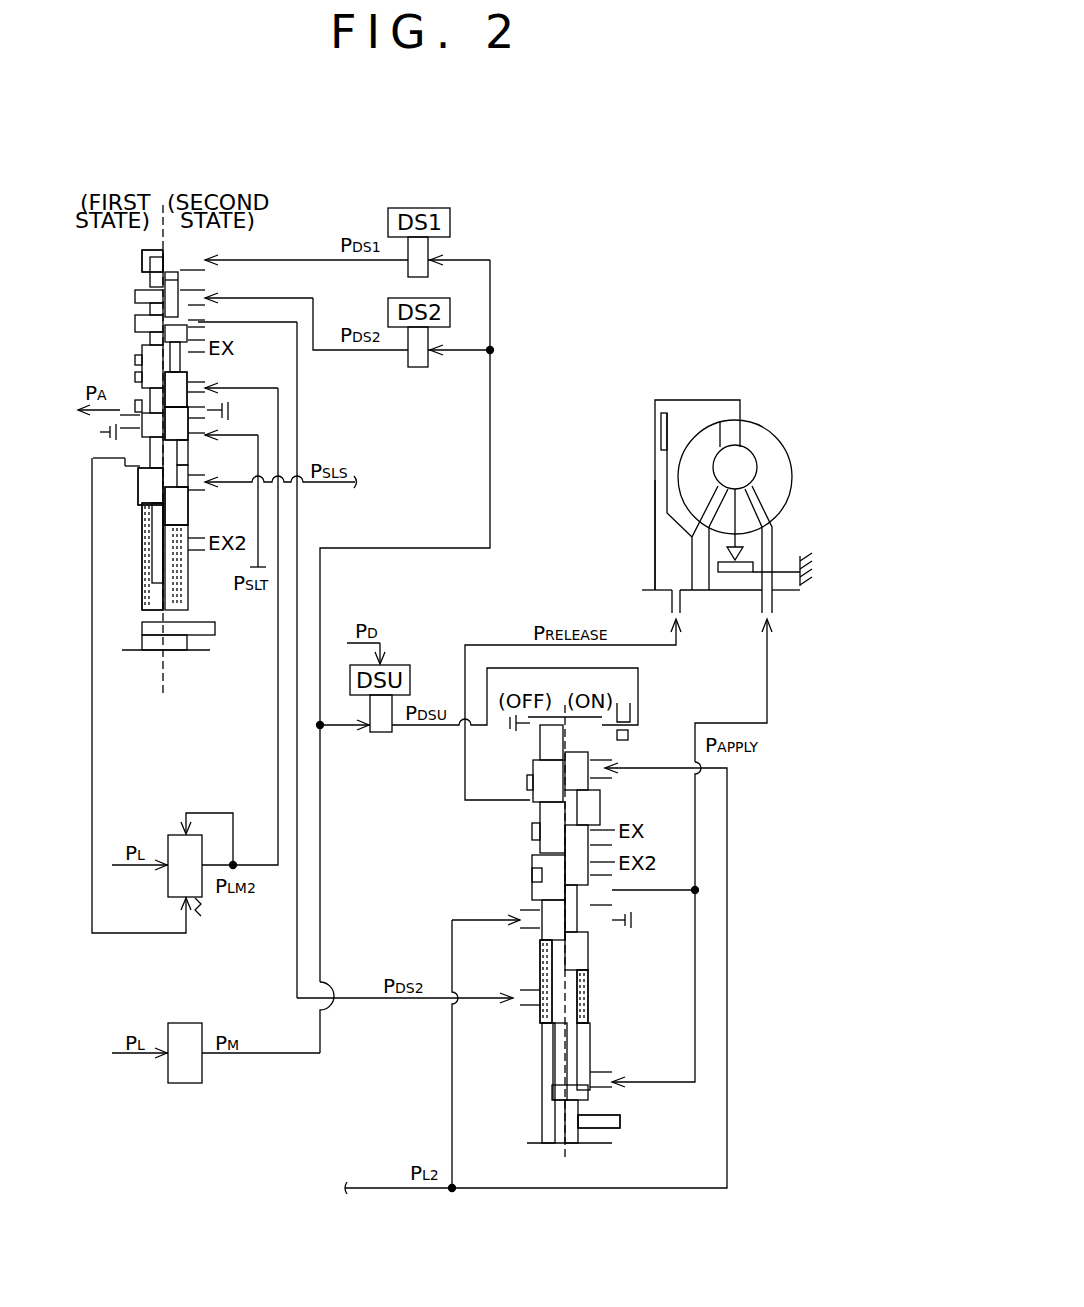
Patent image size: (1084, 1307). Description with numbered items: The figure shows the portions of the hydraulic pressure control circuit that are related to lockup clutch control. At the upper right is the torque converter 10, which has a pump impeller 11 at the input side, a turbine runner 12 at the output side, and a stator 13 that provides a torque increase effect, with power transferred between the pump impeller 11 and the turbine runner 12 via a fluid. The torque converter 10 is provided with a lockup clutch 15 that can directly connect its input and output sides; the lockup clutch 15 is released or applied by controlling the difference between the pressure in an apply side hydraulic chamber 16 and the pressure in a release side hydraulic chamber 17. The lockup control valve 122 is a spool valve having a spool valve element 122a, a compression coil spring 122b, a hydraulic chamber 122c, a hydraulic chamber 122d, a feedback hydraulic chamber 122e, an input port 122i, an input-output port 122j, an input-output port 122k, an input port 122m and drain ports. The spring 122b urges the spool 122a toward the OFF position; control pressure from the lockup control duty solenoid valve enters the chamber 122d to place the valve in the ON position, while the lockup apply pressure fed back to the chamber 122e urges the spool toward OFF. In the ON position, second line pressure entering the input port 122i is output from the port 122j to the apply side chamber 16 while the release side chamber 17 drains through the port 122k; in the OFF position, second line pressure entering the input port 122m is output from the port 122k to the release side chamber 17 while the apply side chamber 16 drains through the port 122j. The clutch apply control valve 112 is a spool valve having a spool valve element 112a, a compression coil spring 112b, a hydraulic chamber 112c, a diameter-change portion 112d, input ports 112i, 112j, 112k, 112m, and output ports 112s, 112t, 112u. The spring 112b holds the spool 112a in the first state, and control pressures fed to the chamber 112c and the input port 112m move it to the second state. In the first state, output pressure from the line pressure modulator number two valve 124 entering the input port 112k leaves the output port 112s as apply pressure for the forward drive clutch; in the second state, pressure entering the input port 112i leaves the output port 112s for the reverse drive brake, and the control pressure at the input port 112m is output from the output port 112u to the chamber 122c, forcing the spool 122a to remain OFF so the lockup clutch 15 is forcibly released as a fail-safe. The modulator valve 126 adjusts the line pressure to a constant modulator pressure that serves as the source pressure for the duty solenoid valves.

The torque converter 10 is at (750, 358).
The pump impeller 11 is at (768, 447).
The turbine runner 12 is at (715, 437).
The stator 13 is at (745, 510).
The lockup clutch 15 is at (660, 432).
The apply side hydraulic chamber 16 is at (680, 425).
The release side hydraulic chamber 17 is at (665, 560).
The clutch apply control valve 112 is at (163, 207).
The spool valve element 112a is at (148, 368).
The compression coil spring 112b is at (142, 598).
The hydraulic chamber 112c is at (200, 252).
The diameter-change portion 112d is at (135, 296).
The input port 112i is at (210, 438).
The input port 112j is at (205, 488).
The input port 112k is at (210, 392).
The input port 112m is at (205, 302).
The output port 112s is at (135, 408).
The output port 112t is at (120, 462).
The output port 112u is at (272, 318).
The lockup control valve 122 is at (515, 1097).
The spool valve element 122a is at (582, 950).
The compression coil spring 122b is at (585, 1015).
The hydraulic chamber 122c is at (540, 1015).
The hydraulic chamber 122d is at (528, 735).
The feedback hydraulic chamber 122e is at (618, 1090).
The input port 122i is at (518, 928).
The input-output port 122j is at (612, 905).
The input-output port 122k is at (532, 820).
The input port 122m is at (612, 760).
The line pressure modulator No. 2 valve 124 is at (172, 834).
The modulator valve 126 is at (172, 1022).